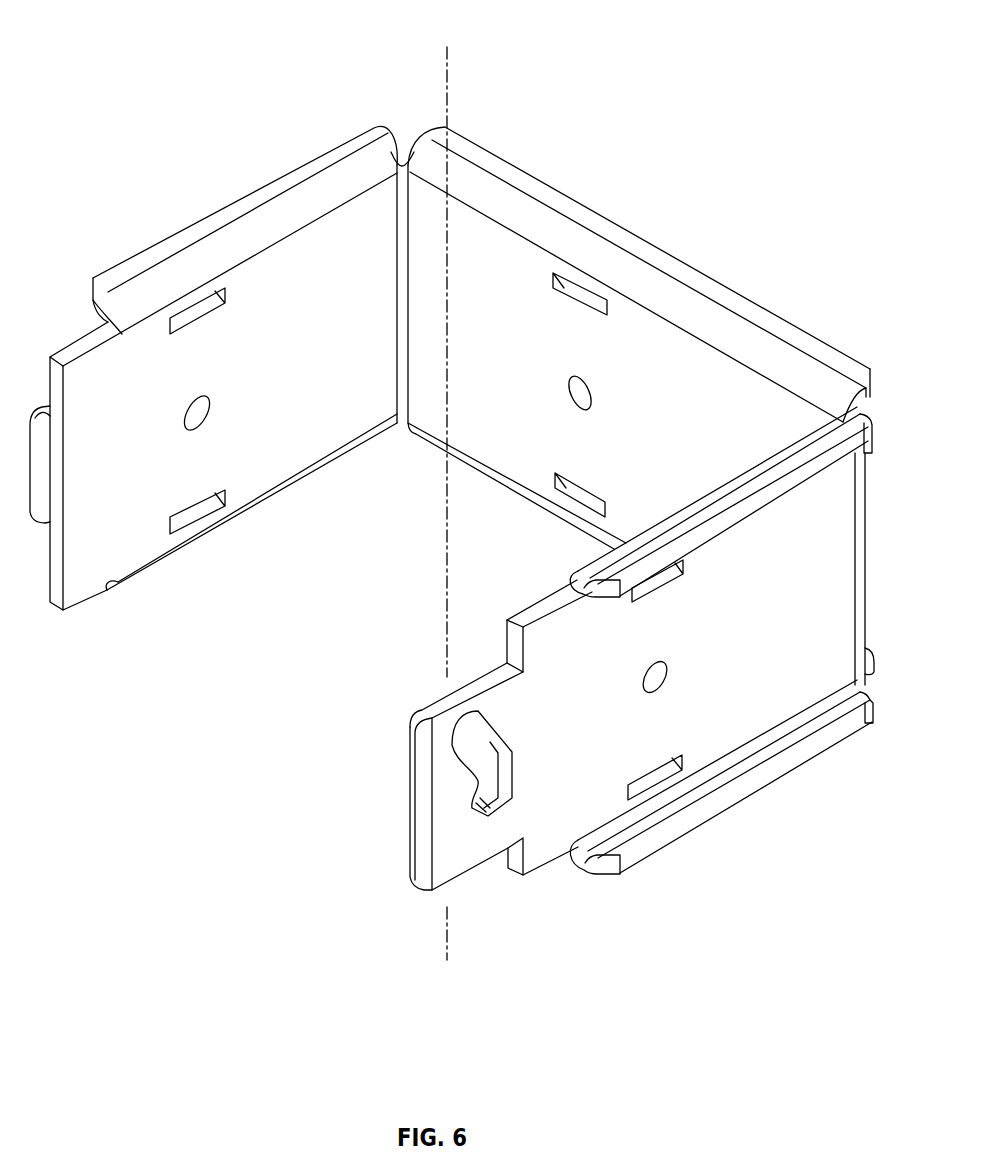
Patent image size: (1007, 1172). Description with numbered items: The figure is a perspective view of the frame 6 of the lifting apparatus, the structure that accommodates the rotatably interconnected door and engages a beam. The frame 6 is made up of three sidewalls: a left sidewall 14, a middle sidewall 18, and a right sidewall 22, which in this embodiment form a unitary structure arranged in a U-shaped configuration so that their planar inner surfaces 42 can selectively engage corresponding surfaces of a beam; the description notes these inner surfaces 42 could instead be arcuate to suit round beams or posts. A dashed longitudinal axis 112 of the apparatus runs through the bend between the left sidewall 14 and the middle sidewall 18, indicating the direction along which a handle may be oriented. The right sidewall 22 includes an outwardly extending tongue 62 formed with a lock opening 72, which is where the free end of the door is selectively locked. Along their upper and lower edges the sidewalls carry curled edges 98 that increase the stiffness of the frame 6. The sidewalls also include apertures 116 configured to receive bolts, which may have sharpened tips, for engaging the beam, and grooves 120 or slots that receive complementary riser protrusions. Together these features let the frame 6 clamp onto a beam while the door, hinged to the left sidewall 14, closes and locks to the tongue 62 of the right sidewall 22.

The frame 6 is at (696, 118).
The left sidewall 14 is at (293, 263).
The middle sidewall 18 is at (669, 322).
The right sidewall 22 is at (599, 676).
The inner surfaces 42 is at (297, 380).
The tongue 62 is at (429, 804).
The lock opening 72 is at (465, 738).
The curled edges 98 is at (320, 156).
The longitudinal axis 112 is at (447, 90).
The apertures 116 is at (592, 392).
The grooves 120 is at (587, 287).